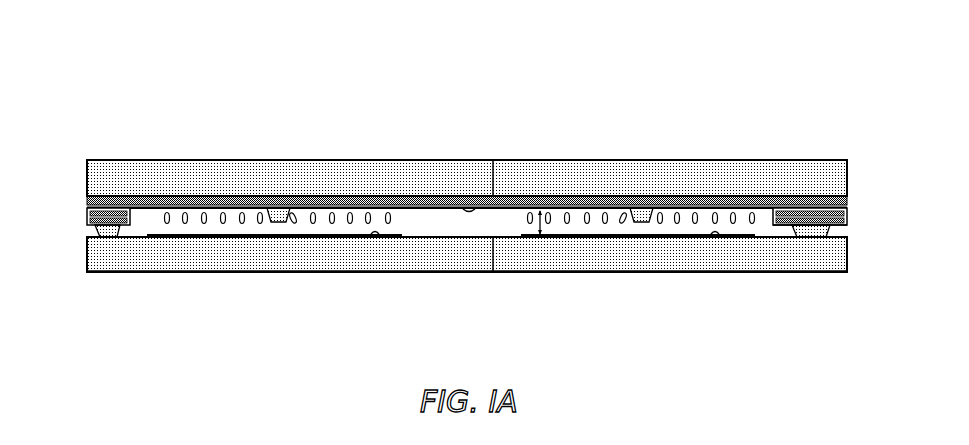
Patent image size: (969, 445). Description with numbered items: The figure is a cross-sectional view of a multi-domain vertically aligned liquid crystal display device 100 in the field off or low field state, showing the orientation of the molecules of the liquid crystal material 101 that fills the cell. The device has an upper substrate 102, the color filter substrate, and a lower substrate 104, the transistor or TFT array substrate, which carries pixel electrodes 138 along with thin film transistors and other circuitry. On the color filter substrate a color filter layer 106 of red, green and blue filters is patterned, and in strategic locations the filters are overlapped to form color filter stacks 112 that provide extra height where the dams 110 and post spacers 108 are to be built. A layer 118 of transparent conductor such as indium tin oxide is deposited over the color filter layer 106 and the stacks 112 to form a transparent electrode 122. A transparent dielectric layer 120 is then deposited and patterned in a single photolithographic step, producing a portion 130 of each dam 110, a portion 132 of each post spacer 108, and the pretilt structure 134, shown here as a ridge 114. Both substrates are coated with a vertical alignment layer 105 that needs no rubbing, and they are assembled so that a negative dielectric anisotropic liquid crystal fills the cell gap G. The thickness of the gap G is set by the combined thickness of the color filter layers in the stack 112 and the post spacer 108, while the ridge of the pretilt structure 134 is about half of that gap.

The liquid crystal display device 100 is at (466, 171).
The liquid crystal material 101 is at (522, 219).
The substrate 102 is at (663, 176).
The substrate 104 is at (88, 263).
The vertical alignment layer 105 is at (154, 208).
The color filter layer 106 is at (84, 198).
The post spacer 108 is at (850, 223).
The dam 110 is at (82, 228).
The color filter stack 112 is at (93, 224).
The ridge 114 is at (282, 222).
The layer 118 is at (400, 206).
The layer 120 is at (843, 234).
The transparent electrode 122 is at (472, 209).
The portion of dam 130 is at (93, 236).
The portion of post spacer 132 is at (790, 238).
The pretilt structure 134 is at (268, 224).
The pixel electrode 138 is at (376, 238).
The cell gap G is at (540, 236).